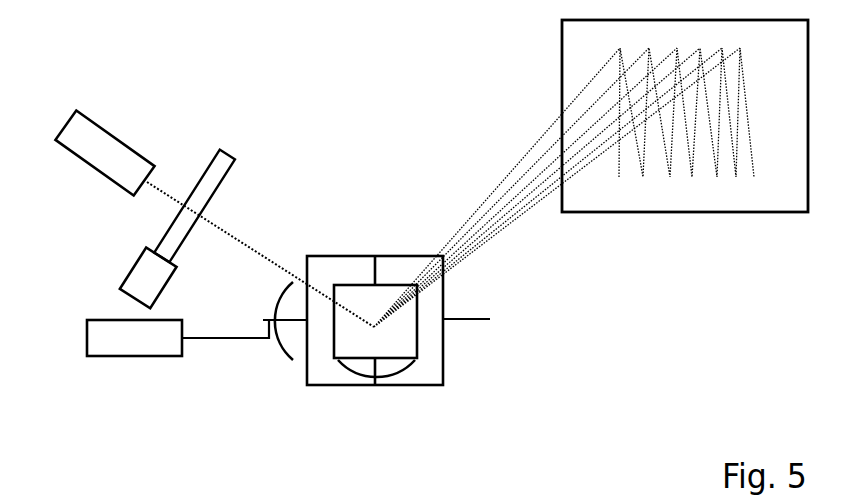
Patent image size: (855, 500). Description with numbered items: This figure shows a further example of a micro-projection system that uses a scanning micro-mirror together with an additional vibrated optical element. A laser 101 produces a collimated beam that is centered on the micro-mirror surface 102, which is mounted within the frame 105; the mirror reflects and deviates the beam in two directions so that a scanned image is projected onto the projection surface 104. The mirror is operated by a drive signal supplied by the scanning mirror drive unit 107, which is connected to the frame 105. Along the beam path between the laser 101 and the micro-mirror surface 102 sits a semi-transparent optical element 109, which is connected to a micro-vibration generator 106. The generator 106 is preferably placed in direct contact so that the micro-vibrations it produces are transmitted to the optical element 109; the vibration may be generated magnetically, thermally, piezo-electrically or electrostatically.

The laser 101 is at (83, 122).
The micro-mirror surface 102 is at (400, 337).
The projection surface 104 is at (730, 212).
The frame 105 is at (310, 385).
The micro-vibration generator 106 is at (128, 280).
The scanning mirror drive unit 107 is at (93, 337).
The semi-transparent optical element 109 is at (227, 160).